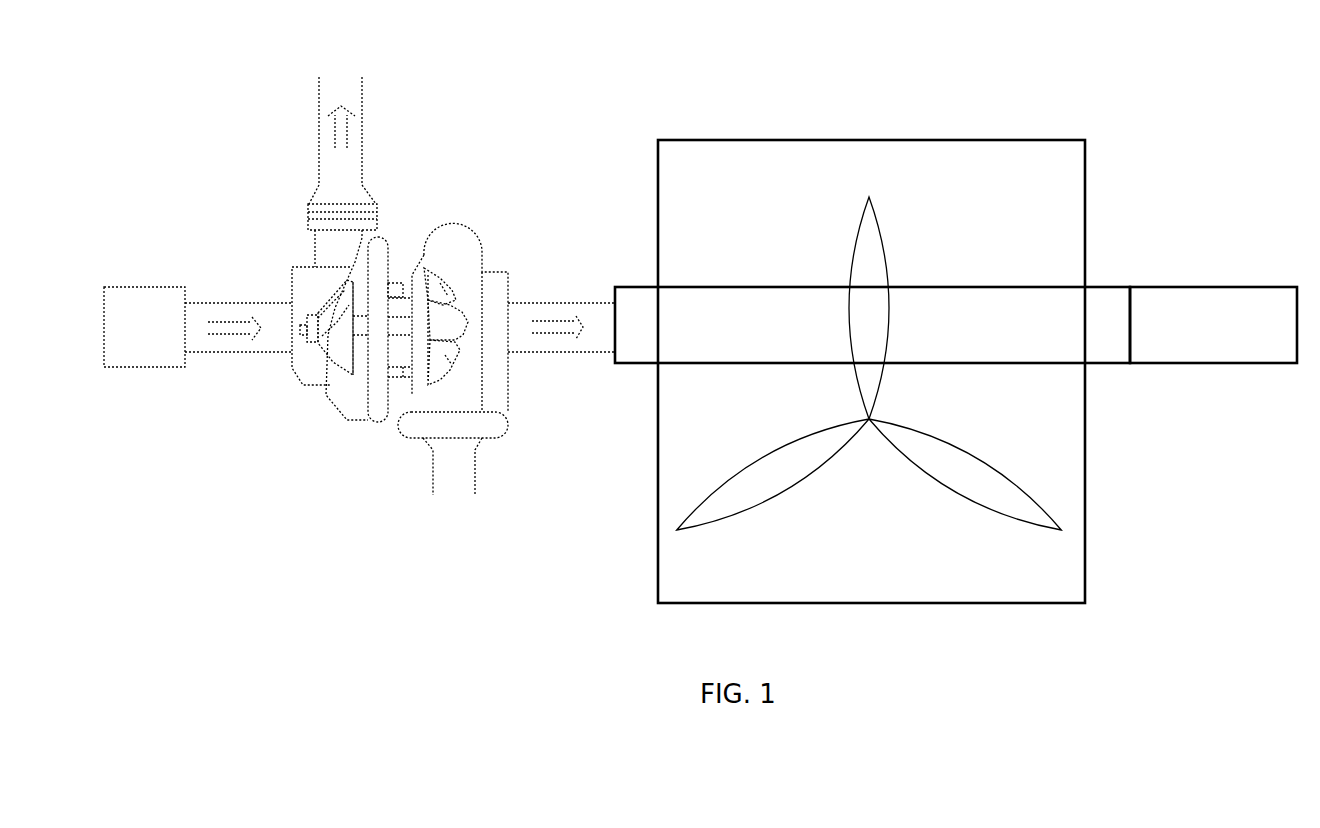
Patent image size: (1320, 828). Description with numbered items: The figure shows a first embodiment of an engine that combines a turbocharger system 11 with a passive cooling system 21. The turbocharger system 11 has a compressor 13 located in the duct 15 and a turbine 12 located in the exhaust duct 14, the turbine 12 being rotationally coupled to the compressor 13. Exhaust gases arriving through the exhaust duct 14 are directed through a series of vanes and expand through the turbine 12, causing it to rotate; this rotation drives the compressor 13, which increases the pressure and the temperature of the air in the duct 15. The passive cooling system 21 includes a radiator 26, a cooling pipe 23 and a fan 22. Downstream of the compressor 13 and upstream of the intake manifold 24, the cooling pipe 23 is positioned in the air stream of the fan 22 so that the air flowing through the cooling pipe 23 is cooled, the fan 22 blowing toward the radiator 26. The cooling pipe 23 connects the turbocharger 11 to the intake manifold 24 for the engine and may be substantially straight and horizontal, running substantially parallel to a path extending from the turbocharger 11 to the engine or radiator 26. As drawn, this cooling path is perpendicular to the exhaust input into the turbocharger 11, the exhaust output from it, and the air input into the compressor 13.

The turbocharger system 11 is at (412, 211).
The turbine 12 is at (343, 387).
The compressor 13 is at (490, 230).
The exhaust duct 14 is at (218, 312).
The duct 15 is at (552, 312).
The passive cooling system 21 is at (688, 87).
The fan 22 is at (860, 217).
The cooling pipe 23 is at (737, 287).
The intake manifold 24 is at (1230, 287).
The radiator 26 is at (783, 140).